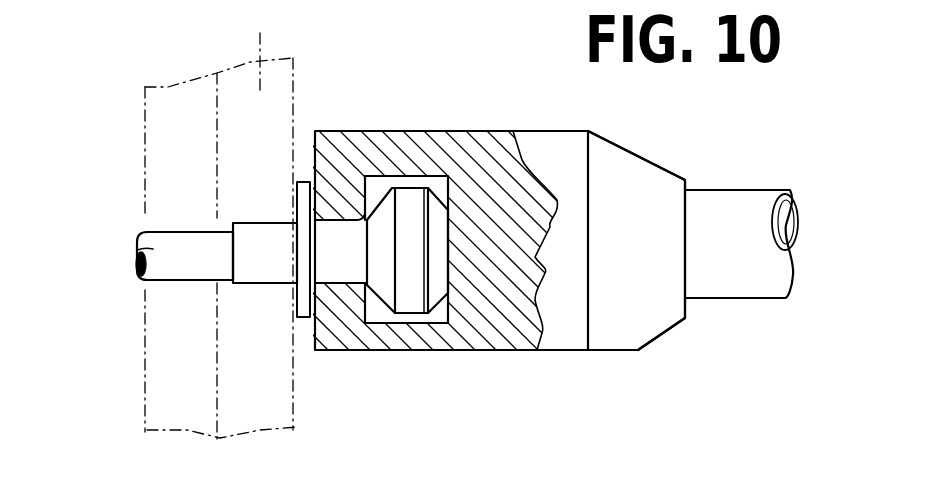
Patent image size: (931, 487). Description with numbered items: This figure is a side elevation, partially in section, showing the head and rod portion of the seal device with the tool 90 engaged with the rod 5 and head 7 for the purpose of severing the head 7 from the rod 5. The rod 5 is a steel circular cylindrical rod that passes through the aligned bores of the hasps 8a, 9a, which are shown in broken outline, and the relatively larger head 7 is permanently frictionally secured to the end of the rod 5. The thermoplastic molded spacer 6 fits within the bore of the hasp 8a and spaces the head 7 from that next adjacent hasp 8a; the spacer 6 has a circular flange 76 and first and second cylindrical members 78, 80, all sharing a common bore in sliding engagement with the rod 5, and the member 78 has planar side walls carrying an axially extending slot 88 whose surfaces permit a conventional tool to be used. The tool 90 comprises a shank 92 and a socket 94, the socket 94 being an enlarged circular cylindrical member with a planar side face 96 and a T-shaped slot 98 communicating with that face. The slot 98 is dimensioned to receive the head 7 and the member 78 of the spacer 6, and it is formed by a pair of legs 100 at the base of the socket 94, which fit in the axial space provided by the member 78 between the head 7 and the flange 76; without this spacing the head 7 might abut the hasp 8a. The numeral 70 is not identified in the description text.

The rod 5 is at (155, 250).
The spacer 6 is at (268, 294).
The head 7 is at (407, 213).
The hasp 8a is at (262, 33).
The hasp 9a is at (170, 117).
The connector 70 is at (413, 5).
The circular flange 76 is at (297, 197).
The first cylindrical member 78 is at (343, 278).
The second cylindrical member 80 is at (268, 222).
The axially extending slot 88 is at (247, 218).
The tool 90 is at (573, 361).
The shank 92 is at (745, 200).
The socket 94 is at (488, 350).
The planar side face 96 is at (545, 150).
The T-shaped slot 98 is at (377, 192).
The legs 100 is at (332, 203).